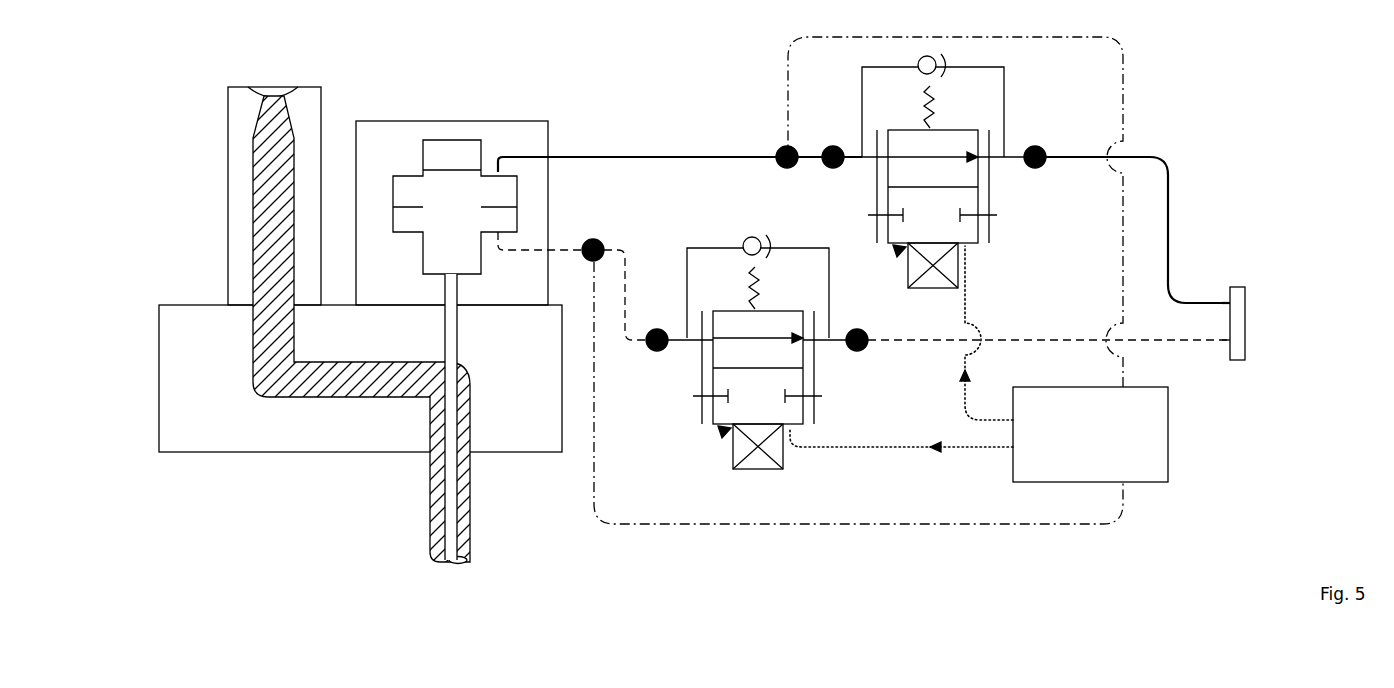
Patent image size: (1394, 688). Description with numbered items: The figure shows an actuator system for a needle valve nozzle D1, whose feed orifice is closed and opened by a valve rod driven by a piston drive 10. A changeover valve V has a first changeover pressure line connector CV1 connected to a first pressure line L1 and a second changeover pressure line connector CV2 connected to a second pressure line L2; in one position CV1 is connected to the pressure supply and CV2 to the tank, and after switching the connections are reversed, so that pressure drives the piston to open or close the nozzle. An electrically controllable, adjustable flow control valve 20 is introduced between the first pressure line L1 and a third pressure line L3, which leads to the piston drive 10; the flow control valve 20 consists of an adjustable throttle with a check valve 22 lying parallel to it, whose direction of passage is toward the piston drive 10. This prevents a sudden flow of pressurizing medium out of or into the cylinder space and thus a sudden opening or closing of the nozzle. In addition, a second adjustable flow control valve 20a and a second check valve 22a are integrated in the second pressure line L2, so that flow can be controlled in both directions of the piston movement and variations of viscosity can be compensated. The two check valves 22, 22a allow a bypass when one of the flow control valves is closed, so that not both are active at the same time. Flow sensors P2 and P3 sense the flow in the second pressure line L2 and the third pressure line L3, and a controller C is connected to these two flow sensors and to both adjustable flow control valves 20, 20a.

The piston drive 10 is at (436, 125).
The needle valve nozzle D1 is at (473, 521).
The third pressure line L3 is at (626, 153).
The flow sensor P3 is at (786, 170).
The flow sensor P2 is at (606, 243).
The second check valve 22a is at (752, 237).
The second adjustable flow control valve 20a is at (758, 358).
The check valve 22 is at (924, 75).
The electrically controllable flow control valve 20 is at (933, 177).
The first pressure line L1 is at (1174, 262).
The first changeover pressure line connector CV1 is at (1227, 300).
The changeover valve V is at (1246, 336).
The second changeover pressure line connector CV2 is at (1226, 352).
The second pressure line L2 is at (1061, 338).
The controller C is at (1090, 434).